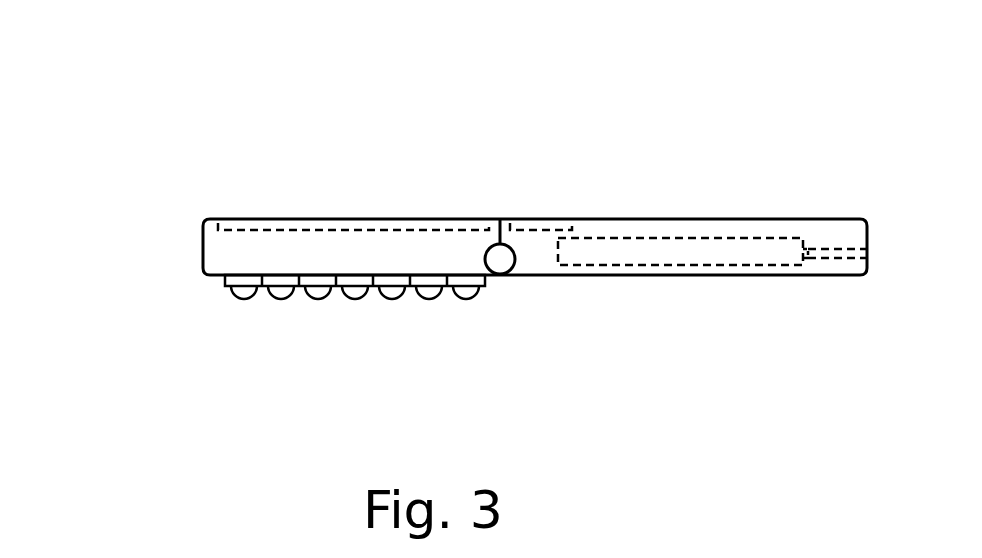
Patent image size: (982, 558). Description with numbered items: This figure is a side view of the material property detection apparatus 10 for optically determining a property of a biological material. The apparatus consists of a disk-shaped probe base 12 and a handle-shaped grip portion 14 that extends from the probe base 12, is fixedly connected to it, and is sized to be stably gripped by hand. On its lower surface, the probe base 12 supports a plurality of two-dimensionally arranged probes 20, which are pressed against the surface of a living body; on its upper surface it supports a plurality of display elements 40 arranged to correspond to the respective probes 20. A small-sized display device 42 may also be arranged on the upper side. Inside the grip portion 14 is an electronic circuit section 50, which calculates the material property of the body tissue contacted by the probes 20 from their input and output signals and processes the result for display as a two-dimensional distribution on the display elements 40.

The material property detection apparatus 10 is at (188, 145).
The probe base 12 is at (225, 255).
The grip portion 14 is at (535, 262).
The probes 20 is at (276, 308).
The display elements 40 is at (392, 218).
The display device 42 is at (543, 218).
The electronic circuit section 50 is at (683, 250).